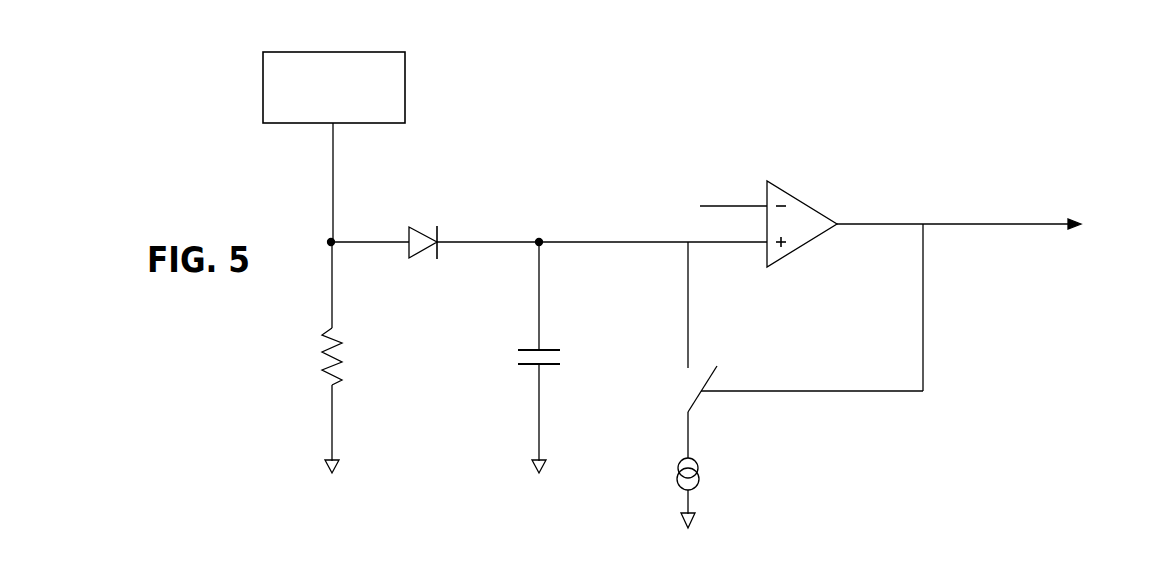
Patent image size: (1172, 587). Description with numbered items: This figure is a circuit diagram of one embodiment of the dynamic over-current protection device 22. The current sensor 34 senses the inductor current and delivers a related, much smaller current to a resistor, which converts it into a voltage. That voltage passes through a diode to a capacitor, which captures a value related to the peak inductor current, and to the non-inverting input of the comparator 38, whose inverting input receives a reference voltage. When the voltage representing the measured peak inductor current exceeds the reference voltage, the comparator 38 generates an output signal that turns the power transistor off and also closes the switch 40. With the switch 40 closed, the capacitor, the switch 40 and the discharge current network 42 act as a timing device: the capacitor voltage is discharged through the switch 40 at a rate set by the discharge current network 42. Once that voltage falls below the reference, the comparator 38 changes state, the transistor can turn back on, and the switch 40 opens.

The dynamic over-current protection device 22 is at (877, 67).
The current sensor 34 is at (263, 85).
The comparator 38 is at (804, 201).
The switch 40 is at (693, 403).
The discharge current network 42 is at (699, 465).